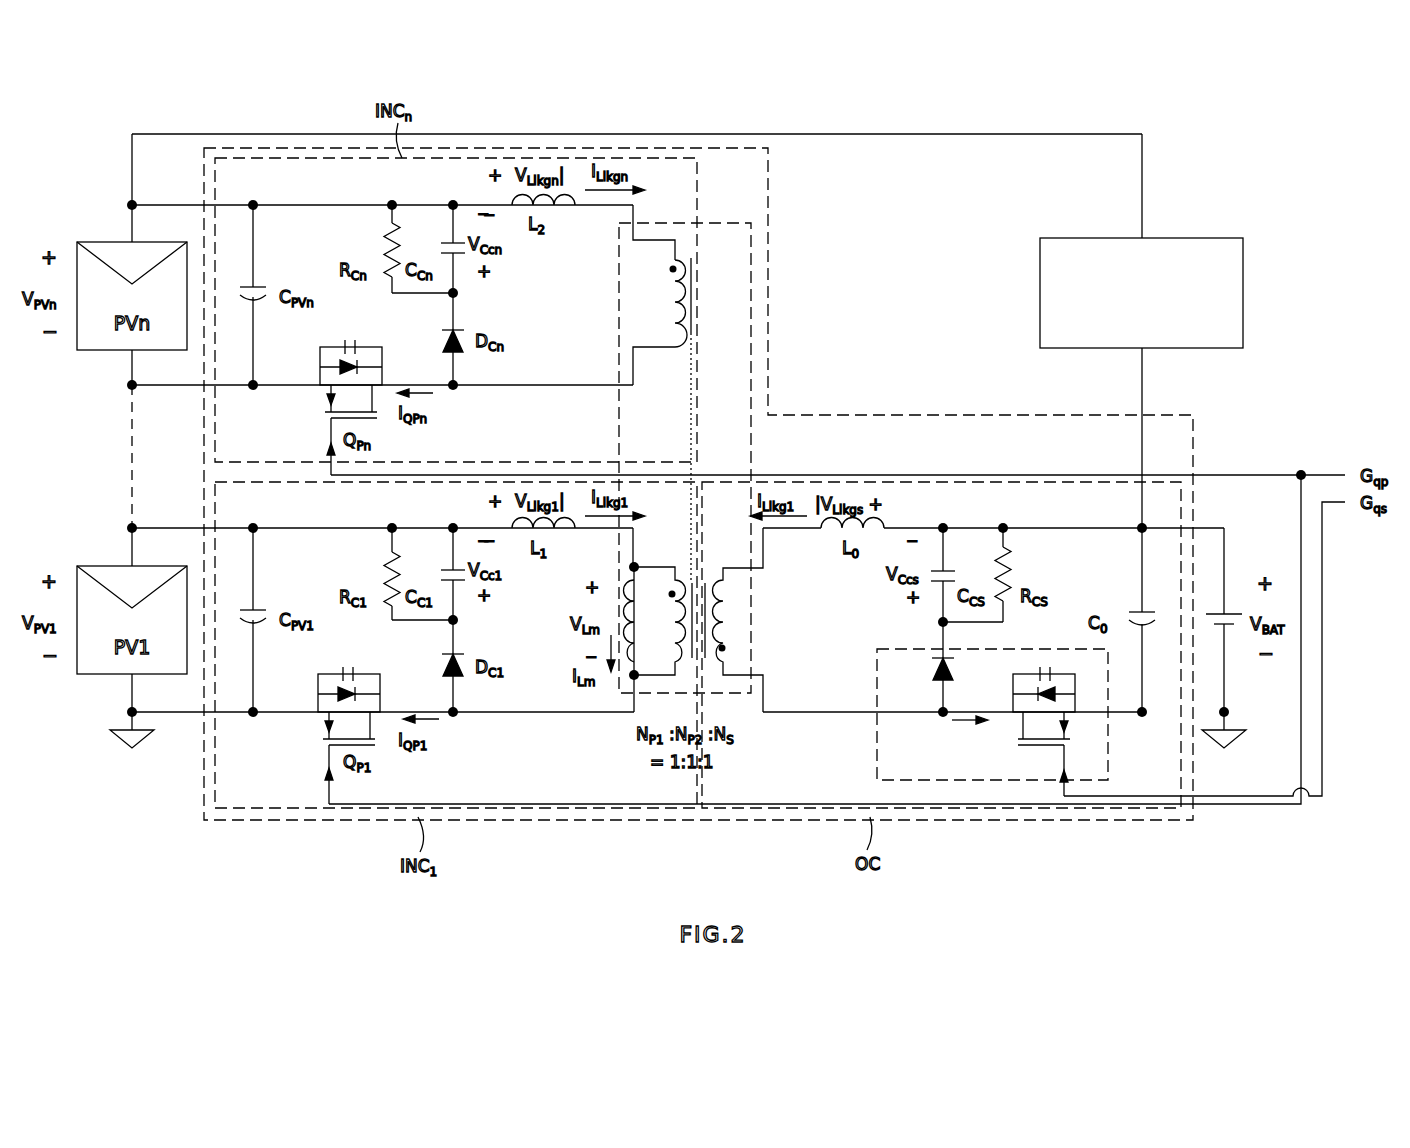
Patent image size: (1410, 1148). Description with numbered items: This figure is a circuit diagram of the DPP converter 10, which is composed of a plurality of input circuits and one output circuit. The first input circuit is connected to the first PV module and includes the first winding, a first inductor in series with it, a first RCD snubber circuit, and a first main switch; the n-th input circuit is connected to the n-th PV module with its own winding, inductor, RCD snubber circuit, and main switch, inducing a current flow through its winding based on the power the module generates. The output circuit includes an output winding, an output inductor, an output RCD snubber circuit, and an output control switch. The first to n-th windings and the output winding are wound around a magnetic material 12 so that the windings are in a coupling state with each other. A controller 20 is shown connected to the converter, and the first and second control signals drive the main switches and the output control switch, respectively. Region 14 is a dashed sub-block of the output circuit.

The DPP converter 10 is at (716, 148).
The magnetic material 12 is at (752, 313).
The output switch circuit 14 is at (991, 780).
The controller 20 is at (1202, 238).